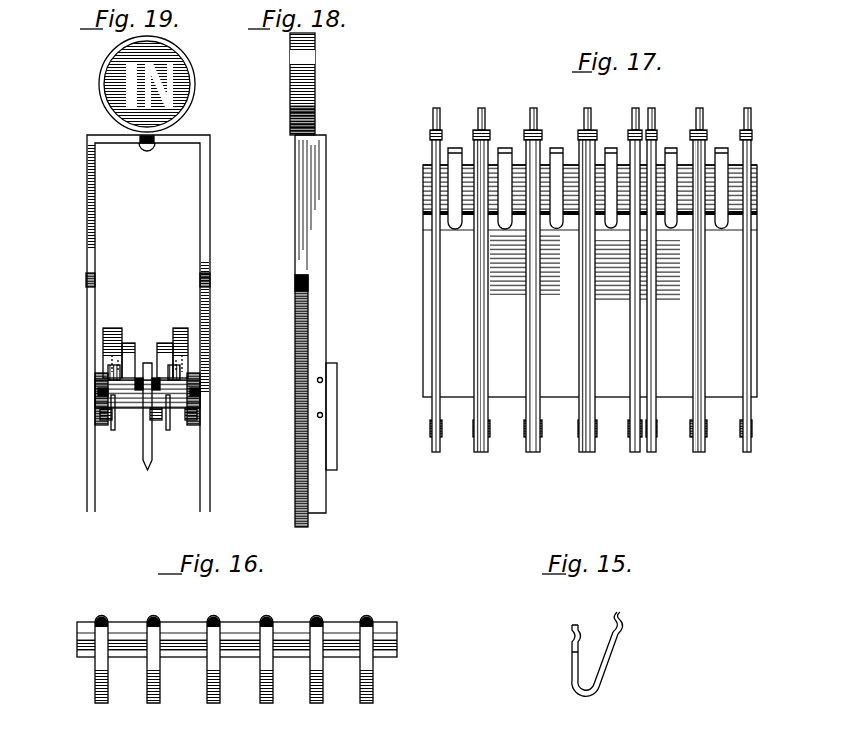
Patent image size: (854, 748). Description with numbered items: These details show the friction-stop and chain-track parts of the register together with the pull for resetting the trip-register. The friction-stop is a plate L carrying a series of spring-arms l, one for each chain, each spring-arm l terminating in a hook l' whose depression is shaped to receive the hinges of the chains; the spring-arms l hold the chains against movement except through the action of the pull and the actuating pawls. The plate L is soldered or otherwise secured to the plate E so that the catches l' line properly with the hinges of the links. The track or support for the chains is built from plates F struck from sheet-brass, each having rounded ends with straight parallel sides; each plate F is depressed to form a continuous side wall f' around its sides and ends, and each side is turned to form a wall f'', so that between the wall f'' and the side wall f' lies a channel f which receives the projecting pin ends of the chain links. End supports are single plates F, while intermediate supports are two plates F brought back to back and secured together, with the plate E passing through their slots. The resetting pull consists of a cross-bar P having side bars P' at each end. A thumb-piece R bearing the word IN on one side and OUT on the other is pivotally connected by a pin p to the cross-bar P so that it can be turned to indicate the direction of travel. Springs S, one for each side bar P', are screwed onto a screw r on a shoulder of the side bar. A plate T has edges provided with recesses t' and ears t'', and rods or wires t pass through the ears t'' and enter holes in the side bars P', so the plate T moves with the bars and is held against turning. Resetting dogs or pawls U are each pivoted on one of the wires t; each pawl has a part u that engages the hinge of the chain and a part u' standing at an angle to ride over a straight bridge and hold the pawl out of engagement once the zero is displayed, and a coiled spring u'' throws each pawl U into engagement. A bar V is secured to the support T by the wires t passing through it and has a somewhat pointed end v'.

In FIG. 19, the thumb-piece R is at (90, 104).
In FIG. 18, the thumb-piece R is at (316, 112).
In FIG. 19, the cross-bar P is at (148, 323).
In FIG. 19, the pin or pivot p is at (143, 152).
In FIG. 19, the screw r is at (86, 286).
In FIG. 18, the screw r is at (295, 288).
In FIG. 19, the plate T is at (100, 406).
In FIG. 19, the rods or wires t is at (107, 444).
In FIG. 18, the rods or wires t is at (339, 397).
In FIG. 19, the recesses t' is at (145, 418).
In FIG. 19, the ears t'' is at (138, 392).
In FIG. 19, the engaging part of pawl u is at (145, 343).
In FIG. 19, the angled part of pawl u' is at (147, 351).
In FIG. 19, the spring u'' is at (155, 392).
In FIG. 19, the resetting dogs or pawls U is at (105, 365).
In FIG. 19, the side bars P' is at (144, 354).
In FIG. 18, the side bars P' is at (310, 324).
In FIG. 19, the bar V is at (153, 465).
In FIG. 18, the bar V is at (338, 452).
In FIG. 19, the pointed end v' is at (140, 421).
In FIG. 18, the springs S is at (295, 440).
In FIG. 17, the plate E is at (423, 324).
In FIG. 17, the plate L is at (440, 210).
In FIG. 16, the plate L is at (245, 639).
In FIG. 15, the plate L is at (560, 648).
In FIG. 17, the spring-arms l is at (585, 188).
In FIG. 16, the spring-arms l is at (234, 659).
In FIG. 15, the spring-arms l is at (595, 660).
In FIG. 17, the hook l' is at (592, 244).
In FIG. 16, the hook l' is at (214, 603).
In FIG. 15, the hook l' is at (626, 621).
In FIG. 17, the channel f is at (591, 286).
In FIG. 17, the side wall f' is at (592, 281).
In FIG. 17, the wall f'' is at (512, 319).
In FIG. 17, the plates F is at (693, 358).